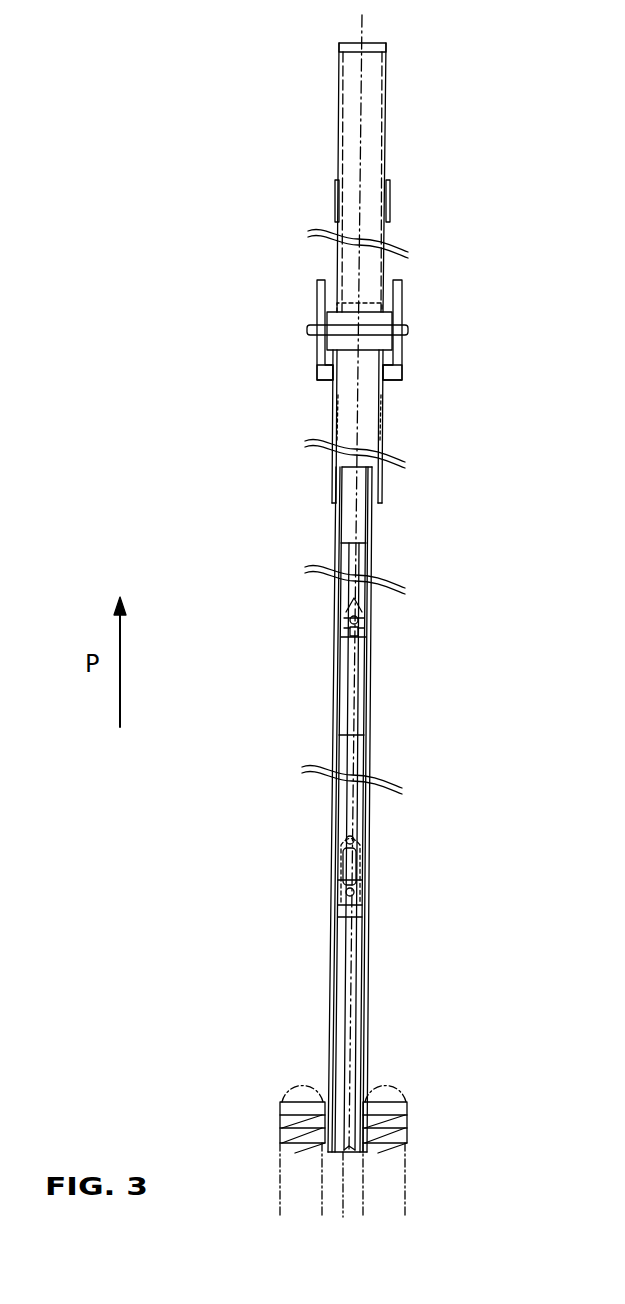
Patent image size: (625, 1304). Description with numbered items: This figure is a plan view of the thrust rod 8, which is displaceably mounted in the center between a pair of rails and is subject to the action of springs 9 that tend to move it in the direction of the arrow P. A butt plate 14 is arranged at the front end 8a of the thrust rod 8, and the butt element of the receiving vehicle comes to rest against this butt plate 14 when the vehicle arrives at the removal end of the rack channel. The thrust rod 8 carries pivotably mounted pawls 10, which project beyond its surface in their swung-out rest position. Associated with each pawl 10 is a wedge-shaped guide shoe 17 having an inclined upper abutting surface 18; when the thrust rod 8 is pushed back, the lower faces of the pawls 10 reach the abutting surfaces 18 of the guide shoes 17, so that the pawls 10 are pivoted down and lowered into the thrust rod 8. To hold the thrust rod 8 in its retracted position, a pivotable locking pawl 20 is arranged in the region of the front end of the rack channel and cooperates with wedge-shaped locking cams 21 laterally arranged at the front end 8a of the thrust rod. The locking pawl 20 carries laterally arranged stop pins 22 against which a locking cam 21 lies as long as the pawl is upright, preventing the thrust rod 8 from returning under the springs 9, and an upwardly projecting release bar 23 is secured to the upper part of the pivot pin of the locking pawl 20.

The thrust rod 8 is at (372, 697).
The front end of the thrust rod 8a is at (370, 133).
The springs 9 is at (295, 1100).
The pawls 10 is at (347, 698).
The butt plate 14 is at (342, 50).
The guide shoes 17 is at (365, 623).
The abutting surface 18 is at (352, 633).
The locking pawl 20 is at (403, 294).
The locking cams 21 is at (333, 213).
The stop pin 22 is at (315, 375).
The release bar 23 is at (343, 330).